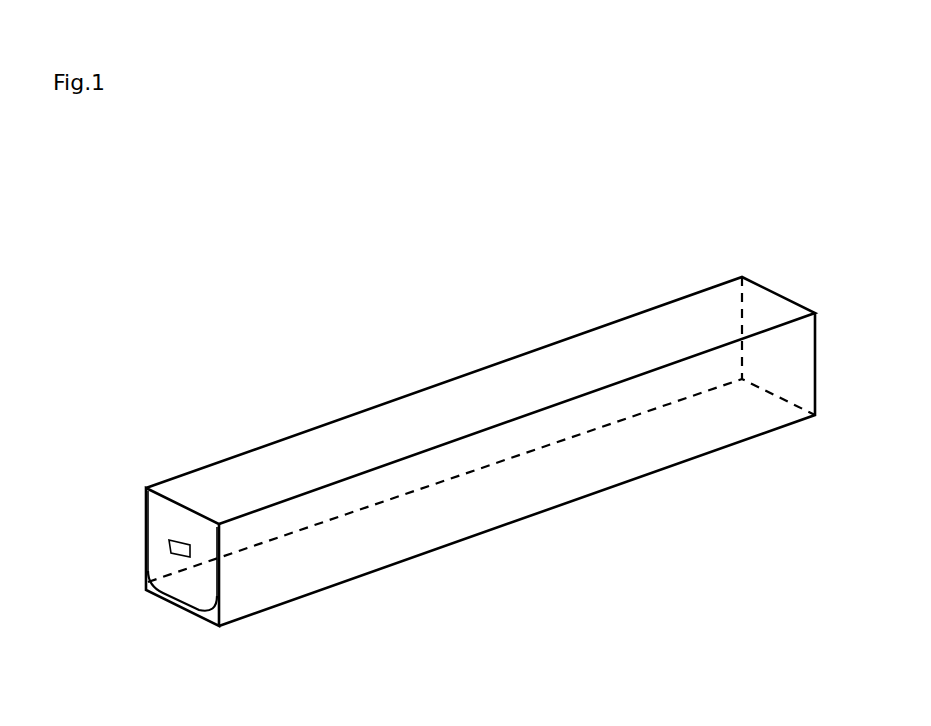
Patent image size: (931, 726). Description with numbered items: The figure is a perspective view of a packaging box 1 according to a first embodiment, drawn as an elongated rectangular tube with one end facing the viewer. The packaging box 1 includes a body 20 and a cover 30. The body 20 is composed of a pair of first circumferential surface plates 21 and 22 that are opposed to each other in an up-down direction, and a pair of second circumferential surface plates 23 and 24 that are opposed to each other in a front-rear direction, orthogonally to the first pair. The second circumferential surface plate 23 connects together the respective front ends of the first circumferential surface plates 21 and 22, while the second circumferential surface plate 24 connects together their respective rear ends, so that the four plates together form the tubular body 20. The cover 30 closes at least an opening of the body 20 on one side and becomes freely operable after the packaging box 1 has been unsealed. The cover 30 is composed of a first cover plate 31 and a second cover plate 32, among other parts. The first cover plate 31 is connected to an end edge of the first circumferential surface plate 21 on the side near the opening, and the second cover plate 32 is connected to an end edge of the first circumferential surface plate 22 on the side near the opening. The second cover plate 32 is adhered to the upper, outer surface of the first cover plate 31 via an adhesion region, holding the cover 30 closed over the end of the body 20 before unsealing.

The packaging box 1 is at (773, 183).
The body 20 is at (261, 458).
The first circumferential surface plate 21 is at (408, 527).
The first circumferential surface plate 22 is at (390, 425).
The second circumferential surface plate 23 is at (532, 490).
The second circumferential surface plate 24 is at (535, 382).
The cover 30 is at (153, 510).
The first cover plate 31 is at (210, 610).
The second cover plate 32 is at (188, 508).